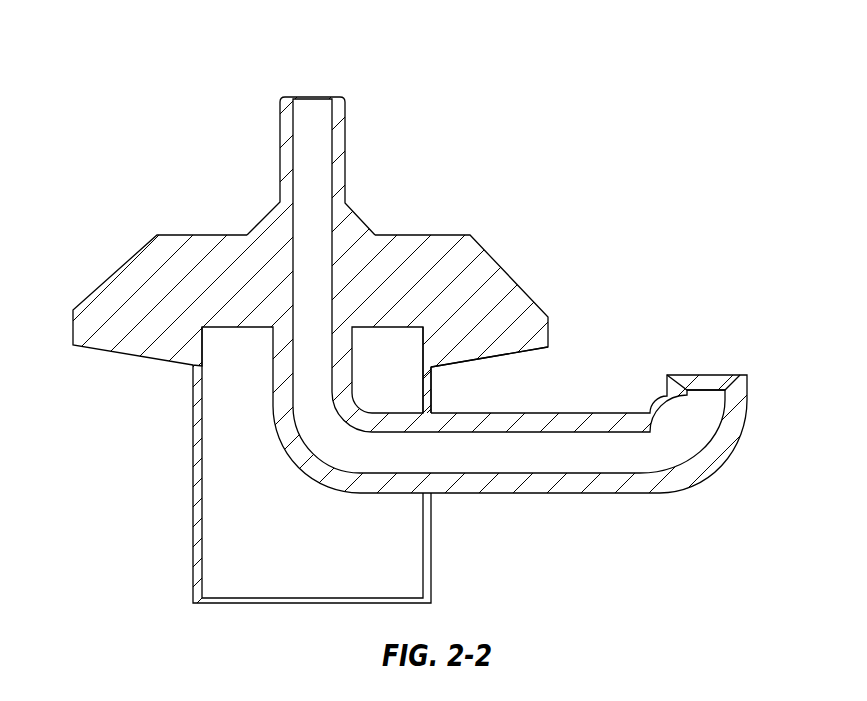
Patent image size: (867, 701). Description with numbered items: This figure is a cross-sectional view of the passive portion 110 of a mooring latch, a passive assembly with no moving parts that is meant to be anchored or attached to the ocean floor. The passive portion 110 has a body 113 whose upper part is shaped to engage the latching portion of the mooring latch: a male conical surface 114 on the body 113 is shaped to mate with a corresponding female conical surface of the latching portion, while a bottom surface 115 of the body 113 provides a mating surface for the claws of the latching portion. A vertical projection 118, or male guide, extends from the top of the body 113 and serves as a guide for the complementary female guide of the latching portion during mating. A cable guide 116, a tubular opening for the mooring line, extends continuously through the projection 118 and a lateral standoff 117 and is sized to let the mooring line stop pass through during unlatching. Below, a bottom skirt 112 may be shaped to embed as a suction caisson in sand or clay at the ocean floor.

The passive portion 110 is at (150, 96).
The bottom skirt 112 is at (322, 572).
The body 113 is at (415, 292).
The male conical surface 114 is at (500, 270).
The bottom surface 115 is at (490, 355).
The cable guide 116 is at (309, 100).
The lateral standoff 117 is at (557, 483).
The projection 118 is at (345, 153).